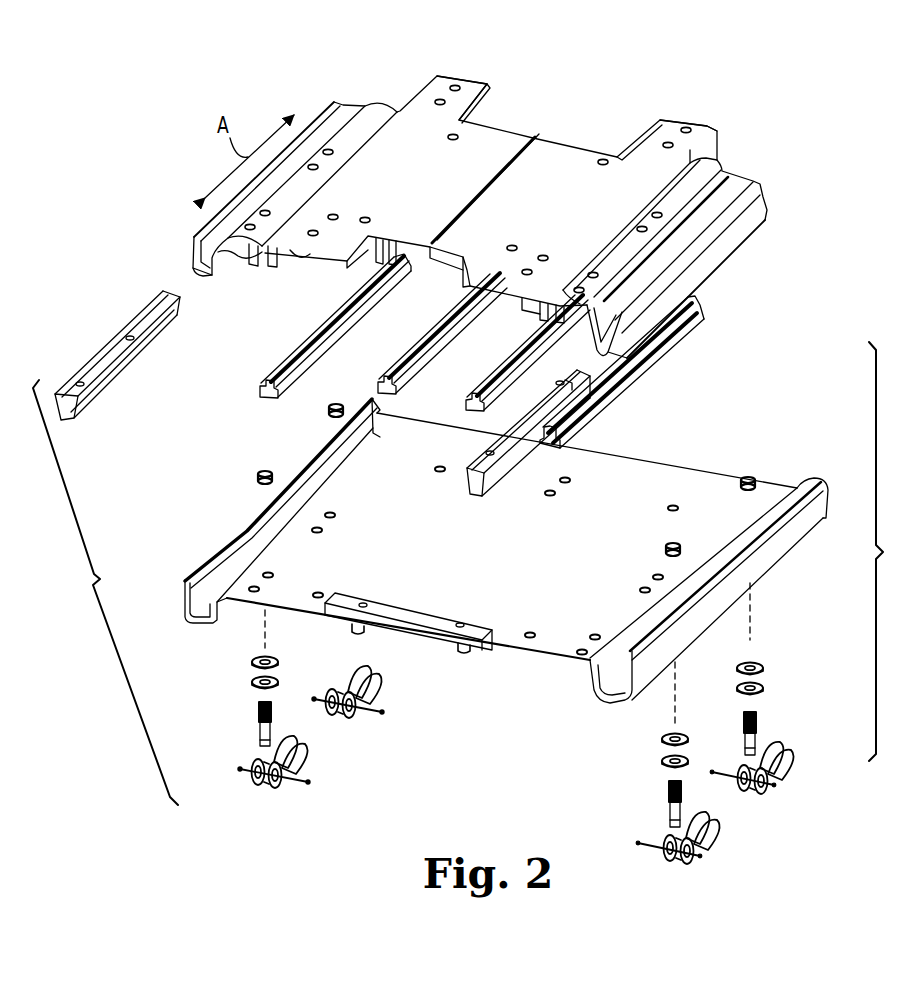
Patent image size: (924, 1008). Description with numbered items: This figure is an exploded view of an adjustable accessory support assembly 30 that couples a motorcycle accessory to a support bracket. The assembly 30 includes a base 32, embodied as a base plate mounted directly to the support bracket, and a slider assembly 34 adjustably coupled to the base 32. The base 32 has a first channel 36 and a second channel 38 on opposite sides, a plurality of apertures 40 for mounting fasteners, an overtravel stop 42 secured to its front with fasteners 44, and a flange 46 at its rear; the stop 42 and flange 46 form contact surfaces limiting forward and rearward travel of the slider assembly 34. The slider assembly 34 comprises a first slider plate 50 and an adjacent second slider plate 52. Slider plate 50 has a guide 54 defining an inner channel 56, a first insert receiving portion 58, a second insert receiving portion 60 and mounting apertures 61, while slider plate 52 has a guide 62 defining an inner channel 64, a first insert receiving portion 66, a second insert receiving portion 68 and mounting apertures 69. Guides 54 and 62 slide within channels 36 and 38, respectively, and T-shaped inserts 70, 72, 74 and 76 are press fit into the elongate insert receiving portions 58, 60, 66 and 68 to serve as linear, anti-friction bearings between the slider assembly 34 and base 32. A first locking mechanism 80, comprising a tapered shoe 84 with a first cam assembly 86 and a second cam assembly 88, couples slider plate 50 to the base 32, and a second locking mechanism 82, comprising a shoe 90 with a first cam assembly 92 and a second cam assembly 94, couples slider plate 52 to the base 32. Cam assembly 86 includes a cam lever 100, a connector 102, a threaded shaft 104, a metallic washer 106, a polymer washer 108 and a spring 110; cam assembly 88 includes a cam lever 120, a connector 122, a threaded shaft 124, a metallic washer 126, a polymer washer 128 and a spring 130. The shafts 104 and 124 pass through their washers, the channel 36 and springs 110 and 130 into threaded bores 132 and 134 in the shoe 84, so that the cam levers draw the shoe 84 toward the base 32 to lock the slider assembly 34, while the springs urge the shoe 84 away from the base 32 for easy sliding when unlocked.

The adjustable accessory support assembly 30 is at (285, 65).
The base 32 is at (535, 664).
The slider assembly 34 is at (508, 150).
The first channel 36 is at (616, 703).
The second channel 38 is at (206, 632).
The apertures 40 is at (439, 471).
The overtravel stop 42 is at (414, 630).
The fasteners 44 is at (358, 631).
The flange 46 is at (785, 490).
The first slider plate 50 is at (703, 126).
The second slider plate 52 is at (465, 78).
The guide 54 is at (720, 252).
The inner channel 56 is at (600, 340).
The first insert receiving portion 58 is at (541, 314).
The second insert receiving portion 60 is at (465, 270).
The apertures 61 is at (668, 148).
The guide 62 is at (200, 244).
The inner channel 64 is at (208, 279).
The first insert receiving portion 66 is at (255, 268).
The second insert receiving portion 68 is at (375, 254).
The apertures 69 is at (441, 106).
The T-shaped insert 70 is at (626, 379).
The T-shaped insert 72 is at (501, 375).
The T-shaped insert 74 is at (300, 347).
The T-shaped insert 76 is at (426, 349).
The first locking mechanism 80 is at (888, 551).
The second locking mechanism 82 is at (105, 592).
The shoe 84 is at (470, 482).
The first cam assembly 86 is at (690, 866).
The second cam assembly 88 is at (762, 803).
The shoe 90 is at (141, 360).
The first cam assembly 92 is at (270, 800).
The second cam assembly 94 is at (344, 728).
The cam lever 100 is at (706, 831).
The connector 102 is at (654, 846).
The threaded shaft 104 is at (668, 812).
The metallic washer 106 is at (665, 762).
The polymer washer 108 is at (665, 739).
The biasing mechanism 110 is at (666, 549).
The cam lever 120 is at (786, 766).
The connector 122 is at (718, 772).
The threaded shaft 124 is at (758, 718).
The metallic washer 126 is at (764, 689).
The polymer washer 128 is at (765, 666).
The biasing mechanism 130 is at (746, 476).
The threaded bore 132 is at (478, 442).
The threaded bore 134 is at (552, 386).